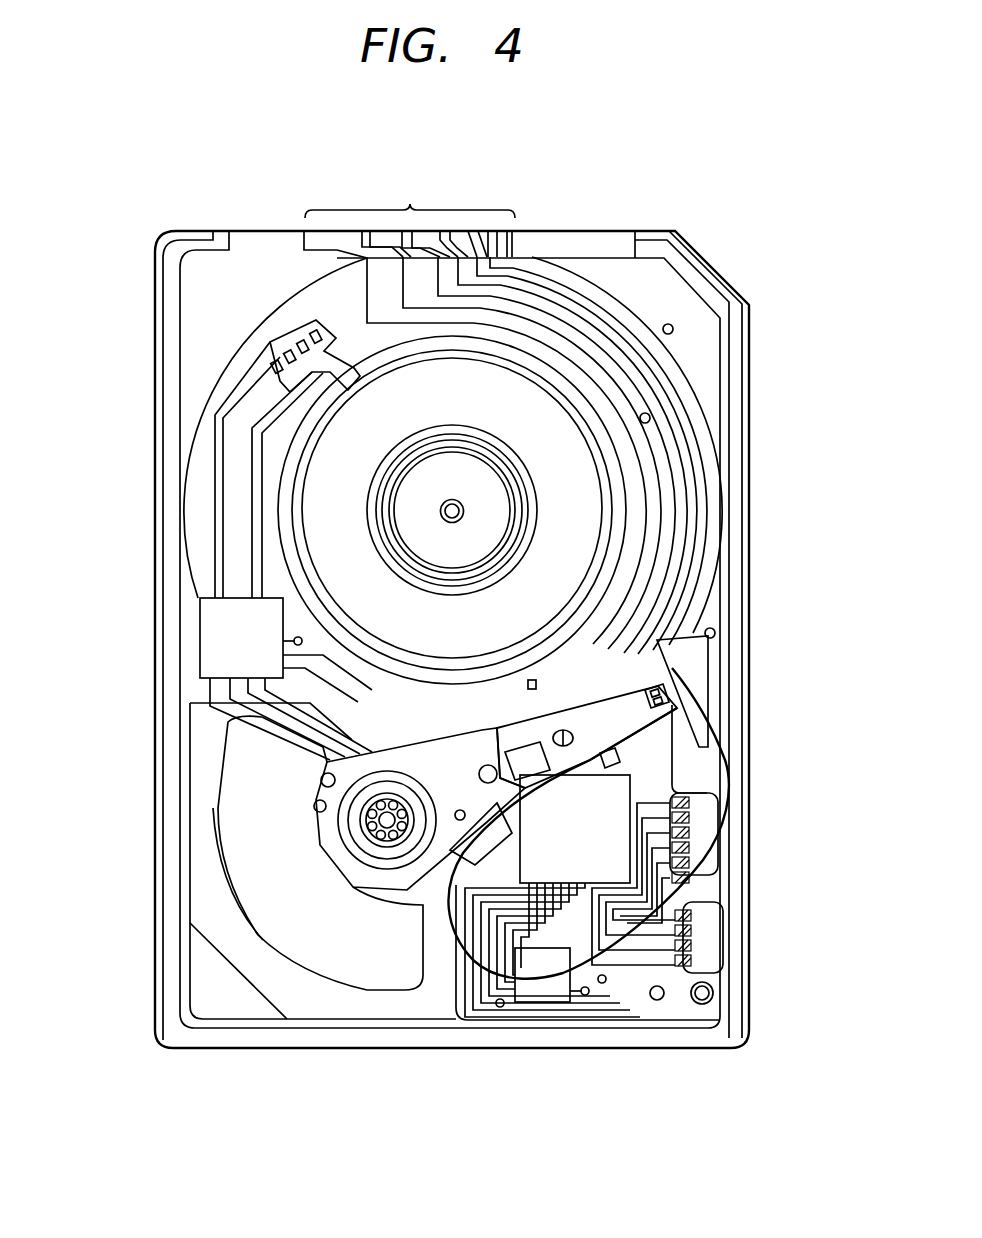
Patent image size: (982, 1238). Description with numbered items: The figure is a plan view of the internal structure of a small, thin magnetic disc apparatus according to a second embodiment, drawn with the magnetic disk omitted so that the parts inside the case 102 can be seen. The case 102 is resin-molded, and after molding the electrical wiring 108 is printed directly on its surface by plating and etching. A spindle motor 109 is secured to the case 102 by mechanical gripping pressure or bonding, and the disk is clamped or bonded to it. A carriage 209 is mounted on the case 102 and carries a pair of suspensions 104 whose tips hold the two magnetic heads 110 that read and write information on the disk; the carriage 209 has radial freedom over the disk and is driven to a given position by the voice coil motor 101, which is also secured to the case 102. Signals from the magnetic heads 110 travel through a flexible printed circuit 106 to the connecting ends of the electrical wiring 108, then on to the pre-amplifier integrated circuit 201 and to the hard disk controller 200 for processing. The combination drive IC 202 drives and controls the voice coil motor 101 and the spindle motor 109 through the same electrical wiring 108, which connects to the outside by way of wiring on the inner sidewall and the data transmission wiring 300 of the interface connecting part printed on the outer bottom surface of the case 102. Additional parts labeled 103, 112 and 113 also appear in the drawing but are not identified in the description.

The voice coil motor 101 is at (255, 893).
The case 102 is at (705, 263).
The load/unload ramp 103 is at (700, 718).
The suspensions 104 is at (585, 695).
The flexible printed circuit 106 is at (660, 935).
The electrical wiring 108 is at (215, 510).
The spindle motor 109 is at (495, 488).
The magnetic heads 110 is at (660, 698).
The connector 112 is at (700, 866).
The connector 113 is at (283, 365).
The hard disk controller 200 is at (615, 838).
The pre-amplifier integrated circuit 201 is at (545, 1002).
The combination drive IC 202 is at (205, 655).
The carriage 209 is at (435, 760).
The data transmission wiring 300 is at (409, 215).